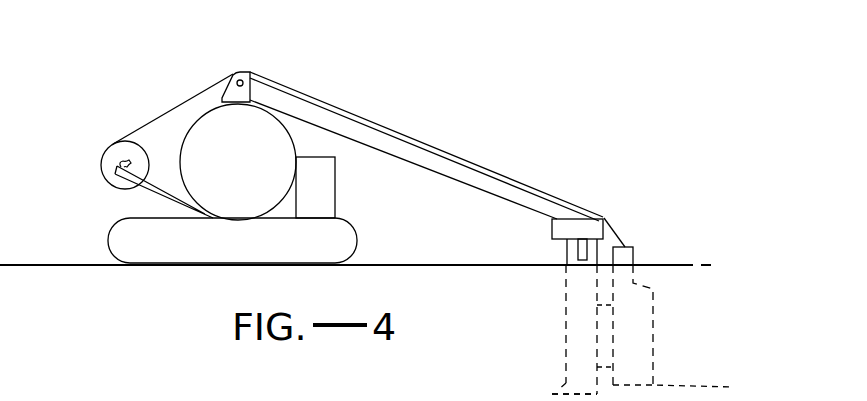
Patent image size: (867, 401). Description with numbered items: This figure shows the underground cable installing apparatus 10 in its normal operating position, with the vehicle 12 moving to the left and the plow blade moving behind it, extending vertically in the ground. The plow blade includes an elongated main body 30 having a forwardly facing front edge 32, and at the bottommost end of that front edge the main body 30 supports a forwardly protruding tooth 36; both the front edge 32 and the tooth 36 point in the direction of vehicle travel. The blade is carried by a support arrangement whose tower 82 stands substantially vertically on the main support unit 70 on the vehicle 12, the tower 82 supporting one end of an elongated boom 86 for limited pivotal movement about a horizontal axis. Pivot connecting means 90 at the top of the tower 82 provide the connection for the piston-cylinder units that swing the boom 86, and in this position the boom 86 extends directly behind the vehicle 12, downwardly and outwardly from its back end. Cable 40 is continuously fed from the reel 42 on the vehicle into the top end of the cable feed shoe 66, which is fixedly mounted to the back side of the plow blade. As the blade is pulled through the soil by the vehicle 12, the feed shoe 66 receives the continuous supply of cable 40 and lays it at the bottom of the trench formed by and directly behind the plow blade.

The apparatus 10 is at (130, 48).
The vehicle 12 is at (352, 240).
The main body 30 is at (566, 252).
The front edge 32 is at (566, 320).
The tooth 36 is at (560, 383).
The cable 40 is at (163, 115).
The reel 42 is at (108, 180).
The cable feed shoe 66 is at (653, 318).
The main support unit 70 is at (250, 176).
The tower 82 is at (240, 71).
The boom 86 is at (470, 172).
The pivot connecting means 90 is at (575, 228).